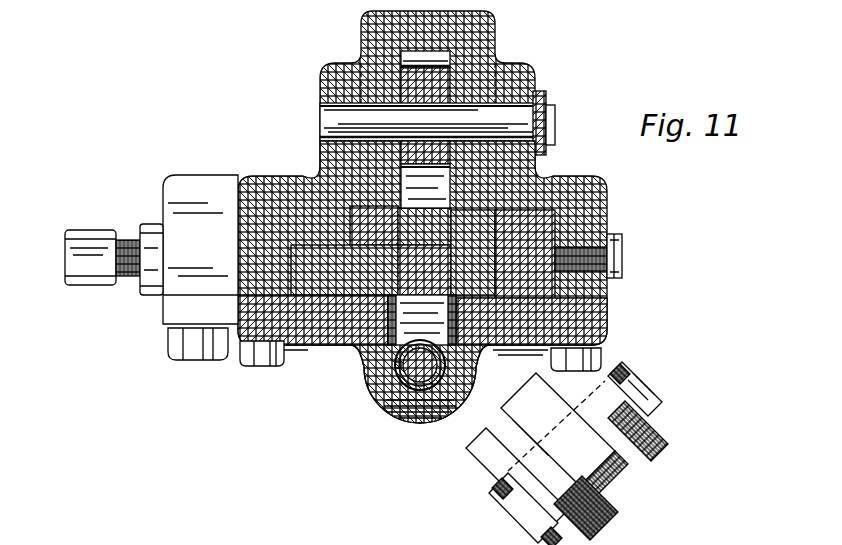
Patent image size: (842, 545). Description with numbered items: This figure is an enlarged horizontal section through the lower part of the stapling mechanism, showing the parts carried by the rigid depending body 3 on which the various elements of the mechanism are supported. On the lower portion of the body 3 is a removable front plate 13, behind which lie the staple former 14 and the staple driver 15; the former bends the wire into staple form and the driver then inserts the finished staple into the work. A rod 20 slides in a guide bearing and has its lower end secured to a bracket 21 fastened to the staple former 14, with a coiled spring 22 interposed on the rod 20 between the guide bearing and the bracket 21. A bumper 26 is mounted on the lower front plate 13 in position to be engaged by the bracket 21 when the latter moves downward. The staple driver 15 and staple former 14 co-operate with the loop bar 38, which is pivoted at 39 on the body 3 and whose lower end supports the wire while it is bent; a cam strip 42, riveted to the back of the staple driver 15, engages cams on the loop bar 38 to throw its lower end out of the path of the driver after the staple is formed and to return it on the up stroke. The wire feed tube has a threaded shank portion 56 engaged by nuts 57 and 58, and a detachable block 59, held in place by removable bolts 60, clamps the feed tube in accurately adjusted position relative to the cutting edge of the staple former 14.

The depending body 3 is at (338, 57).
The front plate 13 is at (584, 311).
The staple former 14 is at (321, 288).
The staple driver 15 is at (342, 200).
The rod 20 is at (410, 372).
The bracket 21 is at (392, 315).
The coiled spring 22 is at (418, 372).
The bumper 26 is at (385, 368).
The loop bar 38 is at (422, 73).
The pivot 39 is at (488, 107).
The cam strip 42 is at (435, 187).
The threaded shank portion 56 is at (122, 268).
The nut 57 is at (145, 287).
The nut 58 is at (85, 277).
The detachable block 59 is at (200, 249).
The bolts 60 is at (194, 348).